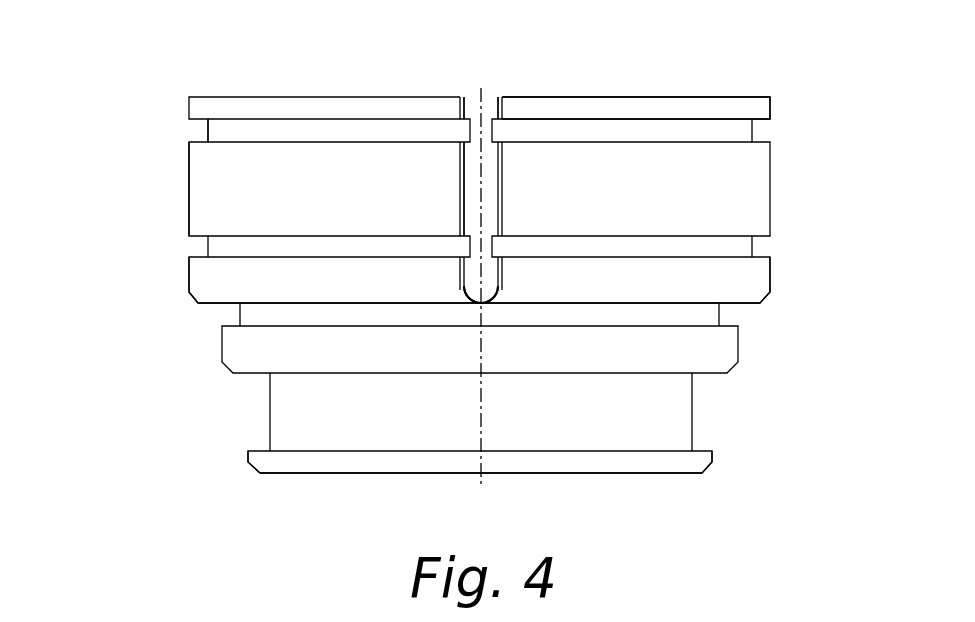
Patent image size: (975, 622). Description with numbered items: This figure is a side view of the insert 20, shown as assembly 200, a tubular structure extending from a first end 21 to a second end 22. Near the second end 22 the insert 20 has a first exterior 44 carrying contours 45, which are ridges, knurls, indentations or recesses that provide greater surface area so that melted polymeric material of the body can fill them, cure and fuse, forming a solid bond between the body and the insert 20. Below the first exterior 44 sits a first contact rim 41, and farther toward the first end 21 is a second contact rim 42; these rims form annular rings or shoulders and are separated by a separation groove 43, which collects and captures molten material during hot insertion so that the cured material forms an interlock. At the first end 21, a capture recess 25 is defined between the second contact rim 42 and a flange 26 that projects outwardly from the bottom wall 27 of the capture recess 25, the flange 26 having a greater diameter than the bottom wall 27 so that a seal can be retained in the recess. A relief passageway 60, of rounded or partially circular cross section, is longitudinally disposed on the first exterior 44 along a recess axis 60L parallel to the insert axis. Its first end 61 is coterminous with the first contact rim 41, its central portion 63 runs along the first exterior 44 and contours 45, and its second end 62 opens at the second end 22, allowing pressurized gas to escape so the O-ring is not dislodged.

The connector assembly 200 is at (680, 90).
The insert 20 is at (110, 240).
The second end 22 is at (610, 97).
The contours 45 is at (247, 131).
The first exterior 44 is at (189, 191).
The relief passageway 60 is at (462, 97).
The second end 62 is at (475, 97).
The central portion 63 is at (472, 186).
The first end 61 is at (466, 297).
The recess axis 60L is at (481, 415).
The first contact rim 41 is at (197, 301).
The separation groove 43 is at (213, 318).
The second contact rim 42 is at (222, 343).
The bottom wall 27 is at (270, 405).
The capture recess 25 is at (222, 442).
The flange 26 is at (253, 468).
The first end 21 is at (608, 473).